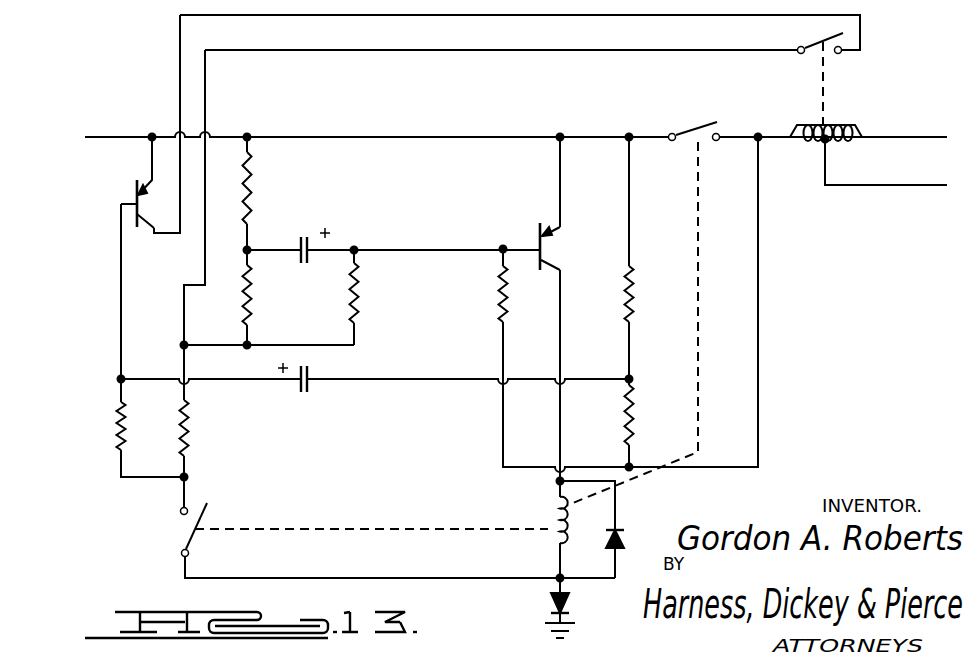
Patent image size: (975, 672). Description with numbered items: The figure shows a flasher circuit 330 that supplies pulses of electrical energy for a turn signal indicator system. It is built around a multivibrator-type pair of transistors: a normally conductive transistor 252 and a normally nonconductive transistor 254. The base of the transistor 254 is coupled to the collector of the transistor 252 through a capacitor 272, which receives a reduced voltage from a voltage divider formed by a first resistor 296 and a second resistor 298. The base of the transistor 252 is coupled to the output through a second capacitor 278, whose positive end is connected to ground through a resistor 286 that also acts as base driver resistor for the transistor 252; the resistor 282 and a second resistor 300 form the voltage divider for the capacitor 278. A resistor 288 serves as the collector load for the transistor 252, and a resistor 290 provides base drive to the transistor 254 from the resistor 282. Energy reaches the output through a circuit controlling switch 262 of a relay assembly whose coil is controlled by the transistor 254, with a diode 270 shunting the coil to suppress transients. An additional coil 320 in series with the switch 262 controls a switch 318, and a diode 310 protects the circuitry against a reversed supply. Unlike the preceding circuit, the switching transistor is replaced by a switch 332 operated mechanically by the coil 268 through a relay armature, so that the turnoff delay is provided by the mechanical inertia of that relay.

The transistor 252 is at (128, 193).
The transistor 254 is at (537, 232).
The switch 262 is at (689, 114).
The coil 268 is at (556, 511).
The diode 270 is at (626, 538).
The capacitor 272 is at (304, 236).
The second capacitor 278 is at (304, 394).
The resistor 282 is at (653, 284).
The resistor 286 is at (129, 424).
The resistor 288 is at (188, 424).
The resistor 290 is at (498, 276).
The first resistor 296 is at (251, 177).
The second resistor 298 is at (251, 289).
The second resistor 300 is at (637, 416).
The diode 310 is at (553, 603).
The switch 318 is at (801, 60).
The additional coil 320 is at (808, 142).
The circuit 330 is at (412, 479).
The switch 332 is at (218, 503).